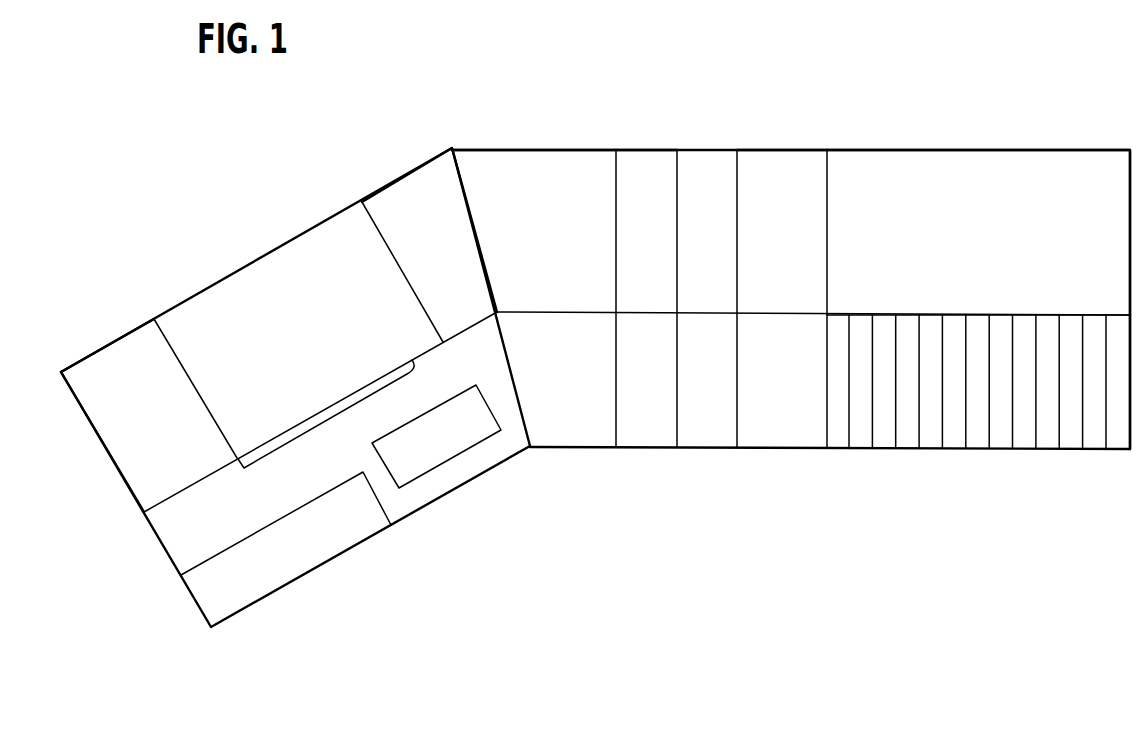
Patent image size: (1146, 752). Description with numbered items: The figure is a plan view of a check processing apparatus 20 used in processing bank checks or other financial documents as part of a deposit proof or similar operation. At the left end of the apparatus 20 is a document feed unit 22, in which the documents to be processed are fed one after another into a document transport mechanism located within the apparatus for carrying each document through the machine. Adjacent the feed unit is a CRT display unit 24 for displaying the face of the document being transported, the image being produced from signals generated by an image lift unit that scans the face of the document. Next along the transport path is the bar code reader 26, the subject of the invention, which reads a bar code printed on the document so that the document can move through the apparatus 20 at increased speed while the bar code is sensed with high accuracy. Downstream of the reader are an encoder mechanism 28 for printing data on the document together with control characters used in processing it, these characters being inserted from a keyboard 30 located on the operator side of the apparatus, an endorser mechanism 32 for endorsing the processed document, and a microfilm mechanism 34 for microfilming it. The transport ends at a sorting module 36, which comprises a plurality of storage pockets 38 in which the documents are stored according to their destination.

The check processing apparatus 20 is at (278, 204).
The document feed unit 22 is at (82, 368).
The CRT display unit 24 is at (265, 457).
The bar code reader 26 is at (470, 165).
The encoder mechanism 28 is at (630, 160).
The keyboard 30 is at (462, 452).
The endorser mechanism 32 is at (697, 160).
The microfilm mechanism 34 is at (782, 160).
The sorting module 36 is at (918, 165).
The storage pockets 38 is at (908, 440).